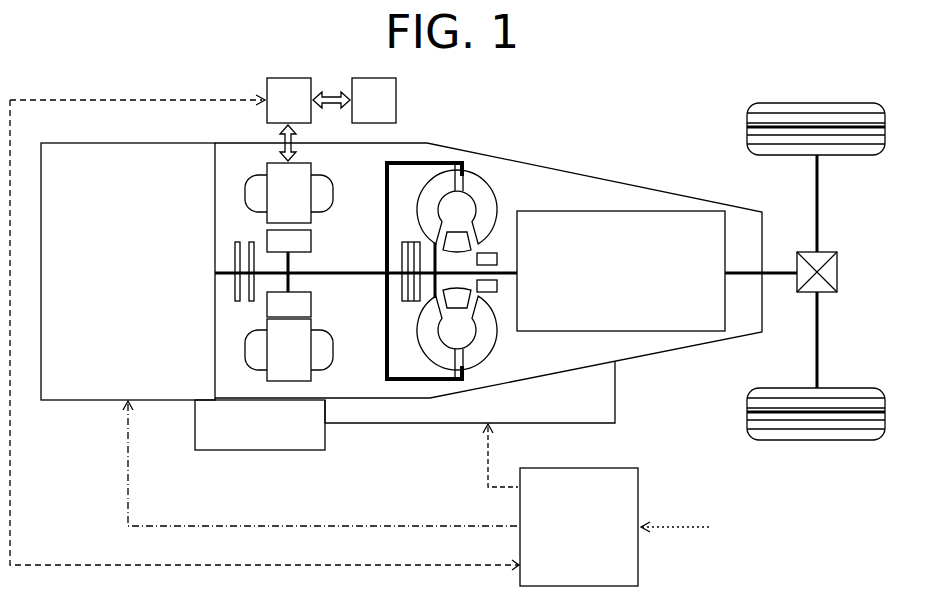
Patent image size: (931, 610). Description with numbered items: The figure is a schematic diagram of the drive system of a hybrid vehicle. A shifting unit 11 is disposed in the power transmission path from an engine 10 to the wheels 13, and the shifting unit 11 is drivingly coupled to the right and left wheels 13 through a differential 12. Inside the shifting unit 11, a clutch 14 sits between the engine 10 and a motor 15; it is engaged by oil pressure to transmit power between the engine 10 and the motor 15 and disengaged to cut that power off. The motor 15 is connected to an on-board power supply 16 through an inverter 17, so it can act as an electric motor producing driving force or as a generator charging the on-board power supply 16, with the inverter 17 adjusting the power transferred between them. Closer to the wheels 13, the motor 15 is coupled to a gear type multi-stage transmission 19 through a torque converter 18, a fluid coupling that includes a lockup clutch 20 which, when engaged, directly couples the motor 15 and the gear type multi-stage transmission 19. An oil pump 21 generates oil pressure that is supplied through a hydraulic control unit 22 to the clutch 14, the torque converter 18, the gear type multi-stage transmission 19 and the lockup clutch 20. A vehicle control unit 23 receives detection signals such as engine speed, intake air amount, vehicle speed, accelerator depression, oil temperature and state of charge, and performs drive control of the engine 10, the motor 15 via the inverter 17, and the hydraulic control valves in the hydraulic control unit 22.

The engine 10 is at (78, 402).
The shifting unit 11 is at (668, 352).
The differential 12 is at (830, 250).
The wheels 13 is at (856, 157).
The clutch 14 is at (235, 282).
The motor 15 is at (333, 198).
The on-board power supply 16 is at (397, 105).
The inverter 17 is at (266, 110).
The torque converter 18 is at (493, 183).
The gear type multi-stage transmission 19 is at (540, 333).
The lockup clutch 20 is at (400, 258).
The oil pump 21 is at (258, 452).
The hydraulic control unit 22 is at (428, 425).
The vehicle control unit 23 is at (640, 480).